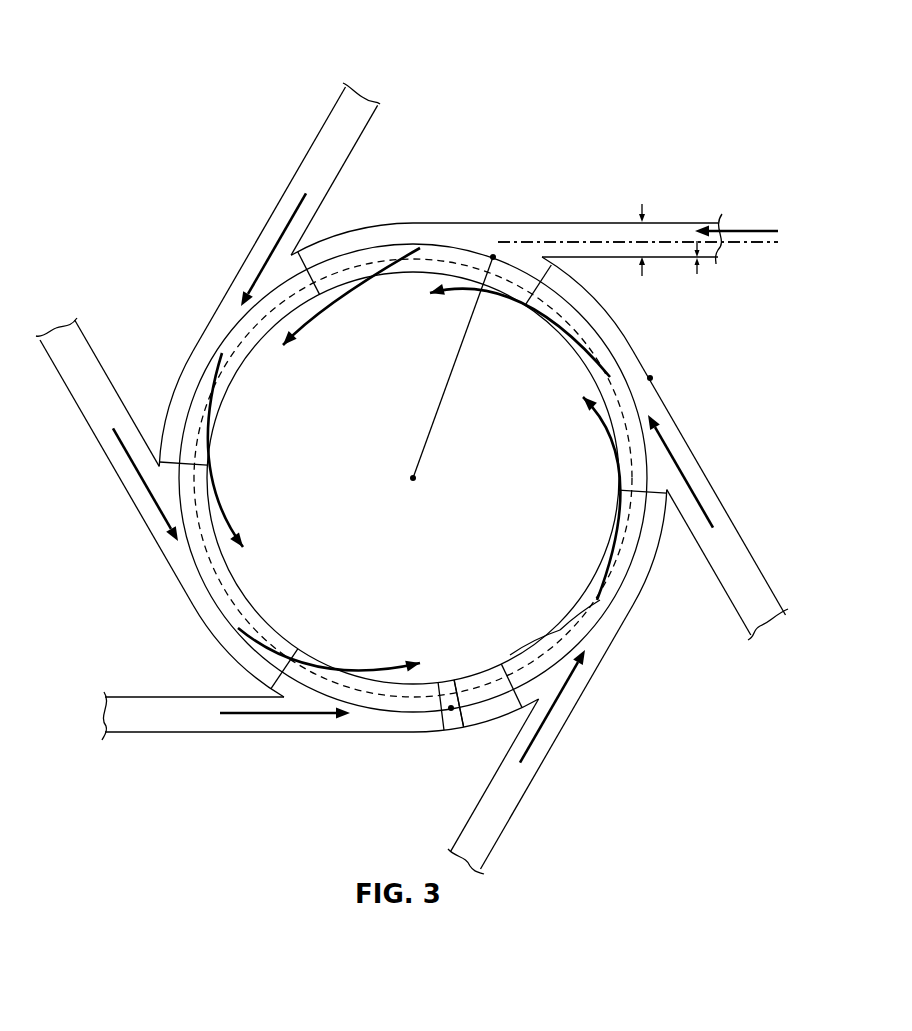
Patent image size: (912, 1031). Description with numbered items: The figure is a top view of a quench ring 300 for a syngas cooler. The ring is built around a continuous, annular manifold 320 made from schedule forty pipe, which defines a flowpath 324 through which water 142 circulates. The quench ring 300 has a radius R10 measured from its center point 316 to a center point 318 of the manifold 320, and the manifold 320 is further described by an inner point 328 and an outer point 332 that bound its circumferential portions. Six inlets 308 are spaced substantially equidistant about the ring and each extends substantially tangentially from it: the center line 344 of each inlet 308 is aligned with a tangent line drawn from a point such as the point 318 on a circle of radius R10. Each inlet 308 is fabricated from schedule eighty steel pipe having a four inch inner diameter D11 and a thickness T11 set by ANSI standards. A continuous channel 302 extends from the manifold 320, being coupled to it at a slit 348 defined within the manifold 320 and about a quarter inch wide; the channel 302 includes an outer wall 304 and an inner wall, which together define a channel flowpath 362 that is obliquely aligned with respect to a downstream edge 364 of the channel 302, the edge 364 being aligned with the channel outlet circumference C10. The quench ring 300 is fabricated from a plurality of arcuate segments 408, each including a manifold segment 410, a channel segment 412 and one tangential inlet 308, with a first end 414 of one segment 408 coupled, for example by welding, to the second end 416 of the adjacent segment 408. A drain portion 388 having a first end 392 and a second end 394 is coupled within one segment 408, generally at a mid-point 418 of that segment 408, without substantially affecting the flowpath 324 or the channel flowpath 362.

The quench ring 300 is at (160, 46).
The channel 302 is at (533, 654).
The outer wall 304 is at (590, 611).
The inlet 308 is at (717, 221).
The center point 316 is at (411, 480).
The center point of manifold 318 is at (493, 256).
The manifold 320 is at (608, 636).
The flowpath 324 is at (264, 640).
The inner point 328 is at (625, 433).
The outer point 332 is at (652, 378).
The center line 344 is at (579, 242).
The slit 348 is at (421, 241).
The channel flowpath 362 is at (391, 663).
The downstream edge 364 is at (252, 355).
The drain portion 388 is at (458, 731).
The first end 392 is at (464, 694).
The second end 394 is at (440, 724).
The segment 408 is at (176, 311).
The manifold segment 410 is at (176, 373).
The channel segment 412 is at (234, 382).
The first end 414 is at (166, 457).
The second end 416 is at (312, 255).
The mid-point 418 is at (451, 707).
The water 142 is at (772, 230).
The channel outlet circumference C10 is at (214, 408).
The radius R10 is at (459, 367).
The inner diameter D11 is at (636, 255).
The thickness T11 is at (697, 273).